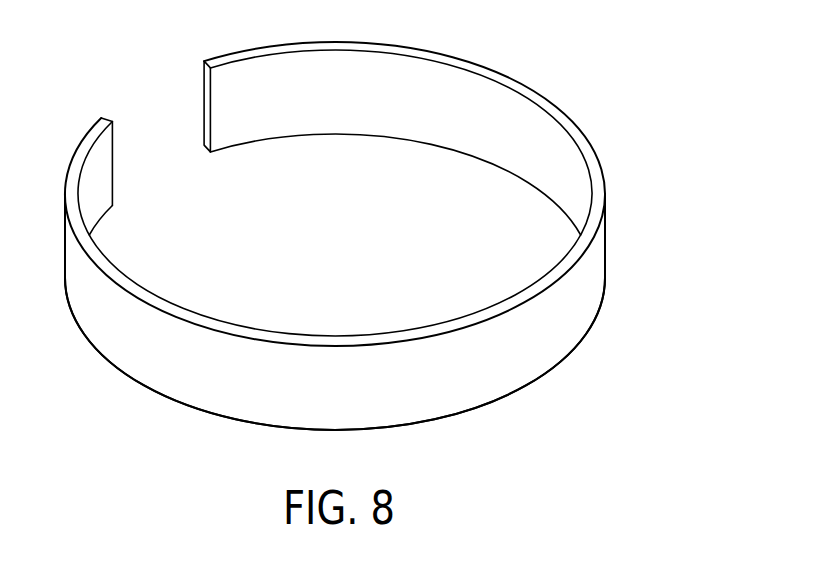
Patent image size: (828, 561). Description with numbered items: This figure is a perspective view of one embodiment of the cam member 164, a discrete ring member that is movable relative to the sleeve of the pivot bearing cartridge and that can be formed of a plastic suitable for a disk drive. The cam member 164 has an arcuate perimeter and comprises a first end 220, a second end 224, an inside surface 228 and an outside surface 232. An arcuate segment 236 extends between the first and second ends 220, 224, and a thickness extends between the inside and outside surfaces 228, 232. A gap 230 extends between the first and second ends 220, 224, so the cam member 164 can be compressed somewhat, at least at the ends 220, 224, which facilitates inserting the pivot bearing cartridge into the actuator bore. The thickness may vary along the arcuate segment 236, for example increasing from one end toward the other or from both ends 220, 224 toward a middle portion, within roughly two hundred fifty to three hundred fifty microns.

The cam member 164 is at (626, 83).
The first end 220 is at (215, 60).
The second end 224 is at (101, 118).
The inside surface 228 is at (377, 115).
The gap 230 is at (117, 210).
The outside surface 232 is at (563, 330).
The arcuate segment 236 is at (432, 440).